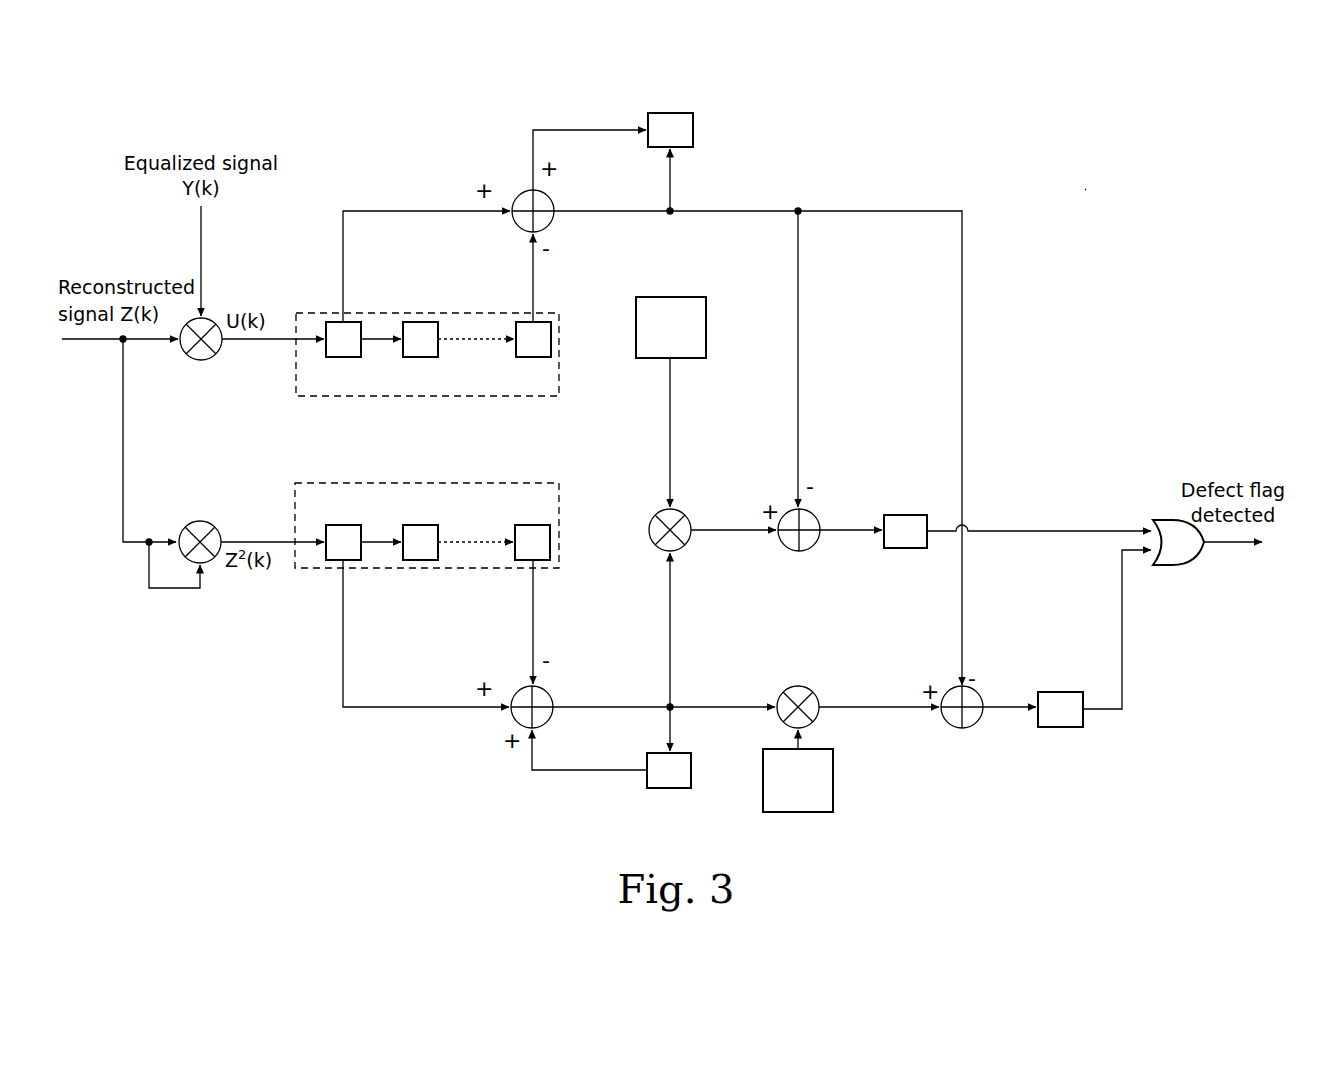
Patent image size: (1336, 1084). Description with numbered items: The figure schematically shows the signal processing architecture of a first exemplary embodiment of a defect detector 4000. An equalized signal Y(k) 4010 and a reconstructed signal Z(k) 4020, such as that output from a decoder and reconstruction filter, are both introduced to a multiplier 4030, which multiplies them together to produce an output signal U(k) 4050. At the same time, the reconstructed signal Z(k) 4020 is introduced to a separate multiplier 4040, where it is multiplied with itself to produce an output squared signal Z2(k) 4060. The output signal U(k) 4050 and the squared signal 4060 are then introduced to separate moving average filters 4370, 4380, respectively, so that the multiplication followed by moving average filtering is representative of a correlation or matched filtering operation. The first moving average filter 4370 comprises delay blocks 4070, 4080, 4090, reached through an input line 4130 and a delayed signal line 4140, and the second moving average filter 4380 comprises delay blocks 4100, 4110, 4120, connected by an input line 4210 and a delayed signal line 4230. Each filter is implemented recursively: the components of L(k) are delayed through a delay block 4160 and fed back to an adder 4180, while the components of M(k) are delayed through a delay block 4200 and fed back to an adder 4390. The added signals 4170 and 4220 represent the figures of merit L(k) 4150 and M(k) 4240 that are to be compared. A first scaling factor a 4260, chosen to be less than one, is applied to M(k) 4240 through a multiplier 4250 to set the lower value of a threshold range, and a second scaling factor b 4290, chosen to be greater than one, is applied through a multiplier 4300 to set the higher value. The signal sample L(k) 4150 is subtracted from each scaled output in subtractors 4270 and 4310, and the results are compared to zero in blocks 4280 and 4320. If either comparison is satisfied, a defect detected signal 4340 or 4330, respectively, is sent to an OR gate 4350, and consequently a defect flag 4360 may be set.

The defect detector 4000 is at (1087, 191).
The equalized signal Y(k) 4010 is at (203, 226).
The reconstructed signal Z(k) 4020 is at (104, 342).
The multiplier 4030 is at (210, 320).
The multiplier 4040 is at (188, 521).
The output signal U(k) 4050 is at (250, 344).
The output squared signal Z2(k) 4060 is at (240, 542).
The delay block 4070 is at (357, 358).
The delay block 4080 is at (438, 358).
The delay block 4090 is at (546, 358).
The delay block 4100 is at (358, 525).
The delay block 4110 is at (437, 525).
The delay block 4120 is at (544, 525).
The input line to summer 4130 is at (393, 211).
The delayed signal line 4140 is at (531, 292).
The figure of merit L(k) 4150 is at (673, 168).
The delay block 4160 is at (695, 130).
The added signal 4170 is at (560, 130).
The adder 4180 is at (519, 196).
The delay block 4200 is at (652, 788).
The input line to summer 4210 is at (380, 708).
The added signal 4220 is at (530, 770).
The delayed signal line 4230 is at (535, 620).
The figure of merit M(k) 4240 is at (751, 710).
The multiplier 4250 is at (686, 547).
The scaling factor a 4260 is at (649, 297).
The subtractor 4270 is at (812, 547).
The comparison block 4280 is at (912, 515).
The scaling factor b 4290 is at (773, 812).
The multiplier 4300 is at (783, 690).
The subtractor 4310 is at (946, 690).
The comparison block 4320 is at (1060, 692).
The defect detected signal 4330 is at (1123, 666).
The defect detected signal 4340 is at (1072, 531).
The OR gate 4350 is at (1185, 565).
The defect flag 4360 is at (1230, 544).
The moving average filter 4370 is at (545, 398).
The moving average filter 4380 is at (321, 482).
The adder 4390 is at (517, 690).